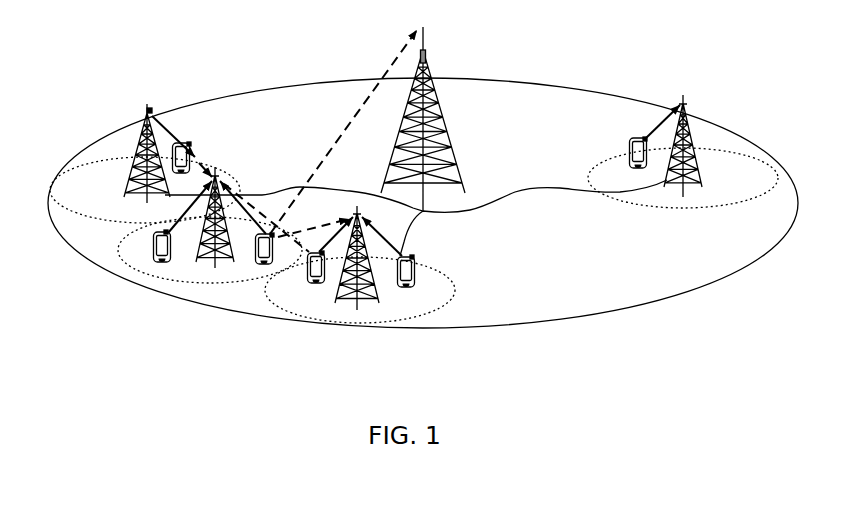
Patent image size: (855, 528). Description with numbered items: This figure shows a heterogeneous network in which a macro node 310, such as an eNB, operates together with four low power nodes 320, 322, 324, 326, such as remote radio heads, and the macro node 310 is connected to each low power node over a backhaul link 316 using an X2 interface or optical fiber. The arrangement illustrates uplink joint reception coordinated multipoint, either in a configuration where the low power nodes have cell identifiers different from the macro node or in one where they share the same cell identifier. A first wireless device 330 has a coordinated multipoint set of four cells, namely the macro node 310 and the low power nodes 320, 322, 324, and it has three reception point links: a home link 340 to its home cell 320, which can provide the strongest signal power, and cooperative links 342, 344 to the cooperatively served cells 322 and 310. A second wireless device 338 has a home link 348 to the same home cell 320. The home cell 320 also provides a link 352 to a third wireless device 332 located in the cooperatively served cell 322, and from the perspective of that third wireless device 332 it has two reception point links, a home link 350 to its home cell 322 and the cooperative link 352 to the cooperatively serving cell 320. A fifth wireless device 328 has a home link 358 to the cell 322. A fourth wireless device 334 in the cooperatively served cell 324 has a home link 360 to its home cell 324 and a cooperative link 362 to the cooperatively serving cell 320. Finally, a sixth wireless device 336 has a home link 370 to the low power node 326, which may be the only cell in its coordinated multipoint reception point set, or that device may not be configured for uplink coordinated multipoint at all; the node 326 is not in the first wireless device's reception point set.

The macro node 310 is at (453, 150).
The backhaul link 316 is at (523, 190).
The low power node 320 is at (215, 267).
The low power node 322 is at (358, 310).
The low power node 324 is at (143, 200).
The low power node 326 is at (688, 105).
The fifth wireless device 328 is at (413, 267).
The first wireless device 330 is at (263, 263).
The third wireless device 332 is at (312, 277).
The fourth wireless device 334 is at (184, 142).
The sixth wireless device 336 is at (628, 150).
The second wireless device 338 is at (150, 243).
The home link 340 is at (283, 205).
The cooperative link 342 is at (327, 198).
The cooperative link 344 is at (362, 112).
The home link 348 is at (181, 228).
The home link 350 is at (343, 197).
The cooperative link 352 is at (257, 193).
The home link 358 is at (386, 216).
The home link 360 is at (162, 122).
The cooperative link 362 is at (200, 160).
The home link 370 is at (653, 120).